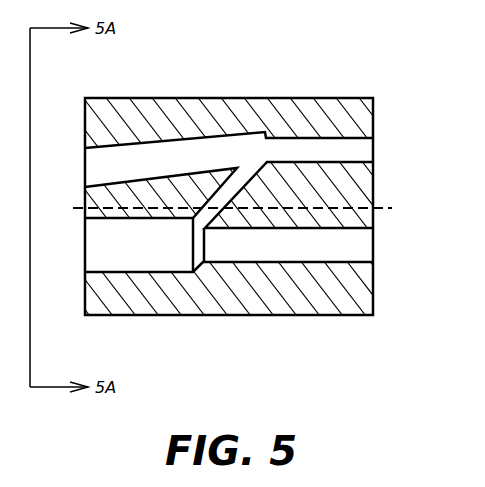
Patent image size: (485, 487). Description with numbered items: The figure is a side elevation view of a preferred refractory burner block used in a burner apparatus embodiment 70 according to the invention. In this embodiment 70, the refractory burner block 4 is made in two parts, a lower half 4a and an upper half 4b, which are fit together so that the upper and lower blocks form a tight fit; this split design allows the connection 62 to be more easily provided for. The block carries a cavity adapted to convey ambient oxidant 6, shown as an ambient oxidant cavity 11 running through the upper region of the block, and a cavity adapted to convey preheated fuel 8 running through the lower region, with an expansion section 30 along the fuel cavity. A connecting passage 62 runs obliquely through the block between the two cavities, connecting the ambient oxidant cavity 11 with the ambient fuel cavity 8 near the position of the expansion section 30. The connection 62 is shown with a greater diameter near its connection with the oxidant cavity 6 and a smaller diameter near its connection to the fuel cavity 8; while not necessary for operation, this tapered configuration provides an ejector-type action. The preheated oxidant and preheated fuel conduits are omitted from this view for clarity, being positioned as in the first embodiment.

The burner apparatus embodiment 70 is at (362, 75).
The refractory burner block 4 is at (327, 315).
The lower half 4a is at (373, 217).
The upper half 4b is at (373, 182).
The cavity adapted to convey ambient oxidant 6 is at (132, 146).
The connecting passage 62 is at (213, 175).
The ambient oxidant cavity 11 is at (250, 133).
The ambient fuel cavity 8 is at (120, 273).
The expansion section 30 is at (200, 265).